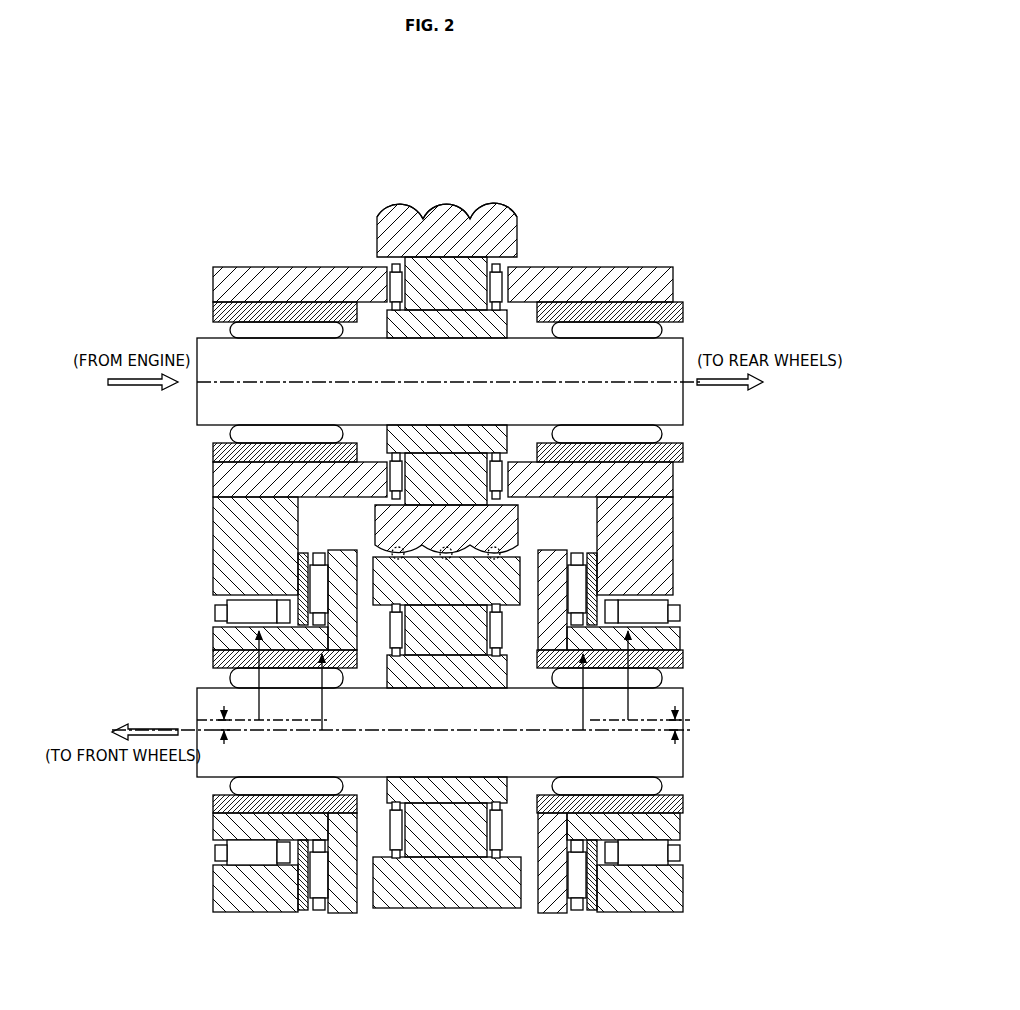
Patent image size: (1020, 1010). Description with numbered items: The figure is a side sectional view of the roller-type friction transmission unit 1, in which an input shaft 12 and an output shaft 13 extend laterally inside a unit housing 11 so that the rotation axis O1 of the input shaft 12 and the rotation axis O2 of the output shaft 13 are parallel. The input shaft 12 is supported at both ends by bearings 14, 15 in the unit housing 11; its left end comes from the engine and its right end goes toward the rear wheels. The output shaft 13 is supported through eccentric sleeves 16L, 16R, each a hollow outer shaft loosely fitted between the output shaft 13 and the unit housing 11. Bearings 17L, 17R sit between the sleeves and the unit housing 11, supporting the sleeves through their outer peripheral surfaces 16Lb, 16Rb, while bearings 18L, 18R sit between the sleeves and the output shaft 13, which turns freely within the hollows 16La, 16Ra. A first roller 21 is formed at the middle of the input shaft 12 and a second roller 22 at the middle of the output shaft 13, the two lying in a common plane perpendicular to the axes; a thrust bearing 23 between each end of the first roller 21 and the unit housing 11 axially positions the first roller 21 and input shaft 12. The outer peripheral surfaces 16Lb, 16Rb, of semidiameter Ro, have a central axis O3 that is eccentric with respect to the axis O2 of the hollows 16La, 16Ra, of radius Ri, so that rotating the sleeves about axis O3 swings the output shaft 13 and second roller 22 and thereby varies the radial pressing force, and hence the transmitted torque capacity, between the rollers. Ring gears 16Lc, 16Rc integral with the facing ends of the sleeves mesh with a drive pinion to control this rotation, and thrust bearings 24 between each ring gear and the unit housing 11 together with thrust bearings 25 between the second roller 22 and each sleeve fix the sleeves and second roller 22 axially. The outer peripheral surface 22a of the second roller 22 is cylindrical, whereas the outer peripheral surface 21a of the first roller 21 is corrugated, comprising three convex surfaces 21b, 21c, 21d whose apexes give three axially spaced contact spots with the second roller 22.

The roller-type friction transmission unit 1 is at (227, 236).
The unit housing 11 is at (660, 266).
The input shaft 12 is at (200, 338).
The output shaft 13 is at (203, 778).
The bearing 14 is at (300, 328).
The bearing 15 is at (598, 328).
The eccentric sleeve 16L is at (251, 755).
The hollow 16La is at (225, 660).
The outer peripheral surface 16Lb is at (222, 612).
The ring gear 16Lc is at (343, 912).
The eccentric sleeve 16R is at (644, 755).
The hollow 16Ra is at (665, 660).
The outer peripheral surface 16Rb is at (672, 612).
The ring gear 16Rc is at (555, 907).
The bearing 17L is at (252, 610).
The bearing 17R is at (648, 610).
The bearing 18L is at (245, 678).
The bearing 18R is at (650, 678).
The first roller 21 is at (472, 196).
The outer peripheral surface 21a is at (517, 163).
The convex surface 21b is at (400, 205).
The convex surface 21c is at (450, 205).
The convex surface 21d is at (496, 205).
The second roller 22 is at (447, 732).
The outer peripheral surface 22a is at (452, 908).
The thrust bearing 23 is at (492, 290).
The thrust bearing 24 is at (318, 553).
The thrust bearing 25 is at (492, 638).
The rotation axis O1 is at (600, 382).
The rotation axis O2 is at (530, 730).
The central axis O3 is at (275, 720).
The radius Ri is at (323, 708).
The semidiameter Ro is at (256, 705).